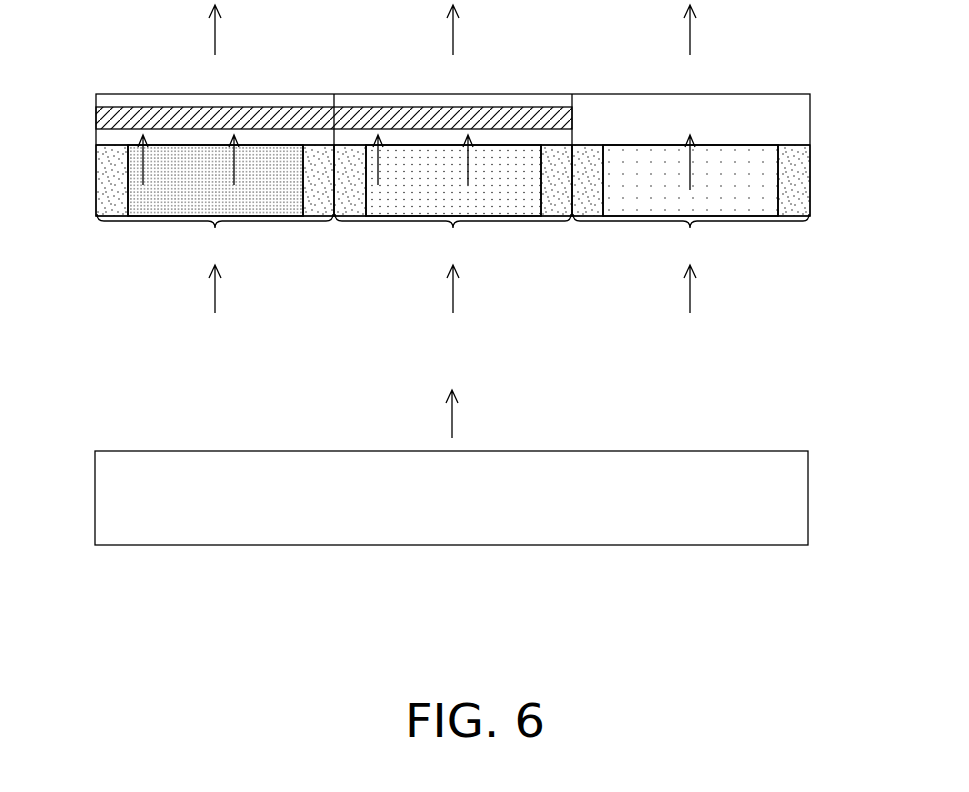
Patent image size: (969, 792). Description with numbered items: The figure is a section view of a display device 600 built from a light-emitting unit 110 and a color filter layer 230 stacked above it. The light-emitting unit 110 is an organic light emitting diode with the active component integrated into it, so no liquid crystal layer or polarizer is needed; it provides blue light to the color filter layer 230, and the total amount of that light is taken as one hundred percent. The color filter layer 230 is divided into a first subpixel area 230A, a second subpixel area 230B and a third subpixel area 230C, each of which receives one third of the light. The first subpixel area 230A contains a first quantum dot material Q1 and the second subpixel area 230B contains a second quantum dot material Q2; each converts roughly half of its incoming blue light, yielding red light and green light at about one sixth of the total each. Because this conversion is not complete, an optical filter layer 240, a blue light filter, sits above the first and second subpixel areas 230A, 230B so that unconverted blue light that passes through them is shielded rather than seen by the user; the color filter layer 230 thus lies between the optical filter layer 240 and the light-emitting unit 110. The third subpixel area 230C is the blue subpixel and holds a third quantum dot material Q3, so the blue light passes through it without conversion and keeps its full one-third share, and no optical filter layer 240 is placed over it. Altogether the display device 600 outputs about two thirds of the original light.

The display device 600 is at (447, 312).
The color filter layer 230 is at (479, 179).
The first subpixel area 230A is at (215, 203).
The second subpixel area 230B is at (453, 204).
The third subpixel area 230C is at (813, 148).
The optical filter layer 240 is at (107, 117).
The first quantum dot material Q1 is at (135, 203).
The second quantum dot material Q2 is at (525, 205).
The third quantum dot material Q3 is at (753, 210).
The light-emitting unit 110 is at (800, 503).